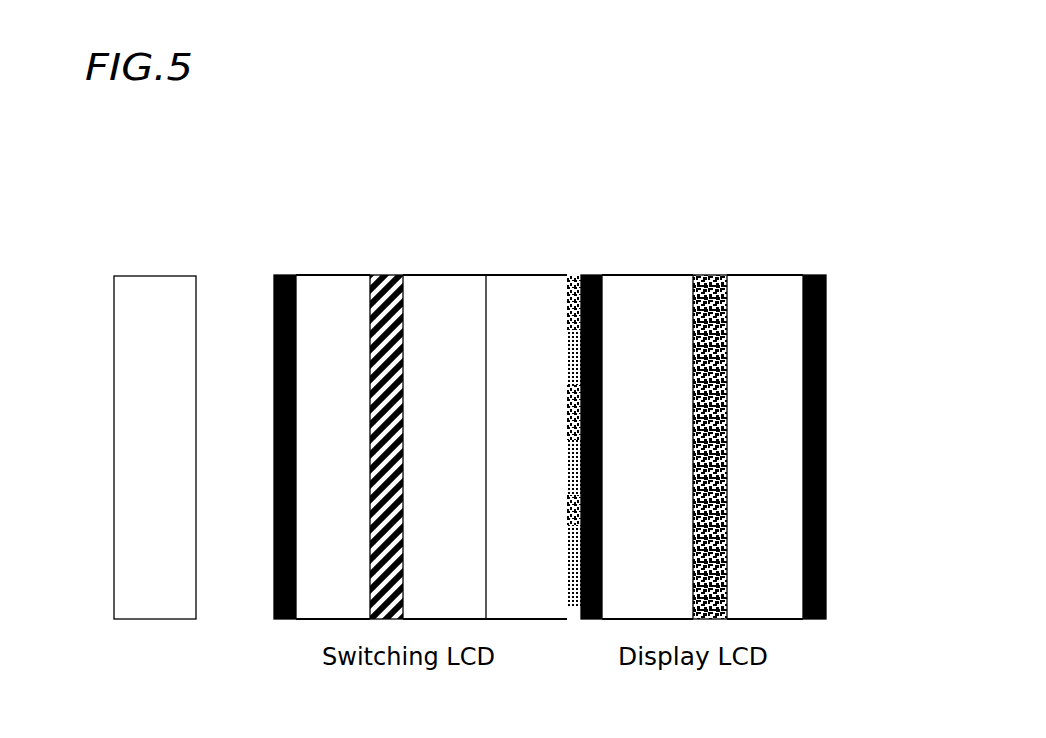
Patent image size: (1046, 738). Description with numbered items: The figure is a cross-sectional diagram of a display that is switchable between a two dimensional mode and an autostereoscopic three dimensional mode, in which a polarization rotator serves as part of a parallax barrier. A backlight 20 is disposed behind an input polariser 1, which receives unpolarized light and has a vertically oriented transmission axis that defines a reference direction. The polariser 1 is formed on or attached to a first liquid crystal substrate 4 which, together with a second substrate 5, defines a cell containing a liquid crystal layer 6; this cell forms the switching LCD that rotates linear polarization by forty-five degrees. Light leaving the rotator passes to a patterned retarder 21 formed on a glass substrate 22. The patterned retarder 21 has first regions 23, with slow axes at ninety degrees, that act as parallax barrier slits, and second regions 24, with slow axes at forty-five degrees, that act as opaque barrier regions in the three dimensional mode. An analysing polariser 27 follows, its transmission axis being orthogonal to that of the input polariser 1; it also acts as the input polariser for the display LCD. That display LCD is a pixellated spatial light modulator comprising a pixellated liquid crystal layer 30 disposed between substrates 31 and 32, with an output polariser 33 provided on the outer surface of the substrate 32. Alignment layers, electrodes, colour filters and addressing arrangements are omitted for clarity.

The input polariser 1 is at (287, 275).
The first liquid crystal substrate 4 is at (373, 100).
The second substrate 5 is at (373, 100).
The liquid crystal layer 6 is at (388, 412).
The backlight 20 is at (152, 355).
The patterned retarder 21 is at (506, 400).
The glass substrate 22 is at (526, 447).
The first regions 23 is at (567, 525).
The second regions 24 is at (573, 612).
The analysing polariser 27 is at (597, 273).
The pixellated liquid crystal layer 30 is at (706, 277).
The substrate 31 is at (647, 298).
The substrate 32 is at (765, 490).
The output polariser 33 is at (815, 273).